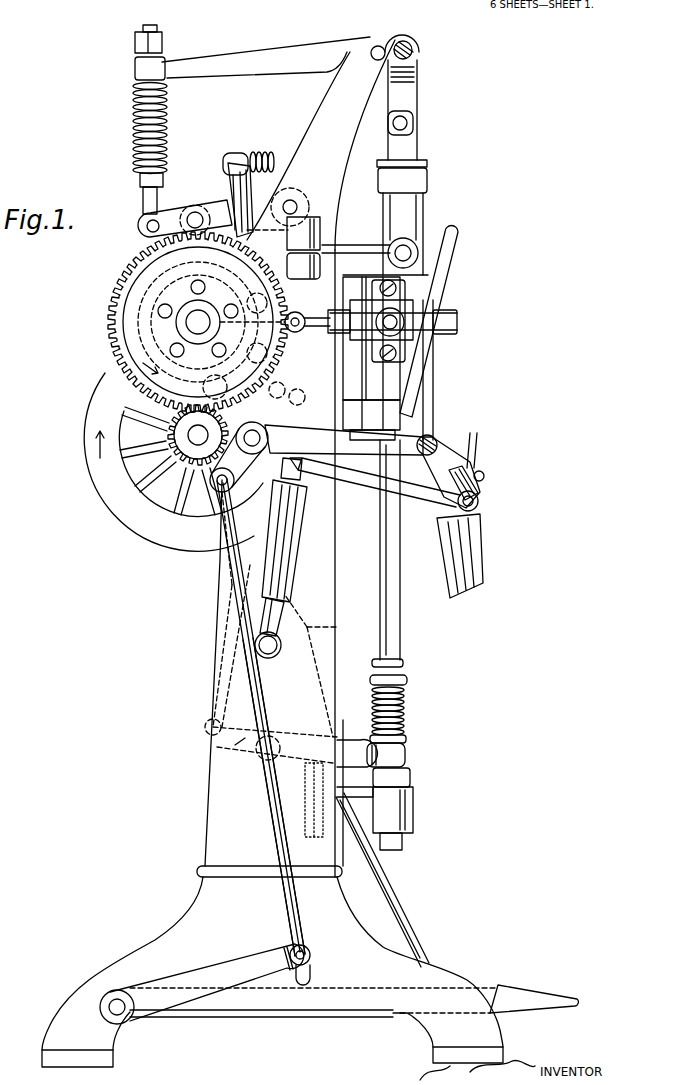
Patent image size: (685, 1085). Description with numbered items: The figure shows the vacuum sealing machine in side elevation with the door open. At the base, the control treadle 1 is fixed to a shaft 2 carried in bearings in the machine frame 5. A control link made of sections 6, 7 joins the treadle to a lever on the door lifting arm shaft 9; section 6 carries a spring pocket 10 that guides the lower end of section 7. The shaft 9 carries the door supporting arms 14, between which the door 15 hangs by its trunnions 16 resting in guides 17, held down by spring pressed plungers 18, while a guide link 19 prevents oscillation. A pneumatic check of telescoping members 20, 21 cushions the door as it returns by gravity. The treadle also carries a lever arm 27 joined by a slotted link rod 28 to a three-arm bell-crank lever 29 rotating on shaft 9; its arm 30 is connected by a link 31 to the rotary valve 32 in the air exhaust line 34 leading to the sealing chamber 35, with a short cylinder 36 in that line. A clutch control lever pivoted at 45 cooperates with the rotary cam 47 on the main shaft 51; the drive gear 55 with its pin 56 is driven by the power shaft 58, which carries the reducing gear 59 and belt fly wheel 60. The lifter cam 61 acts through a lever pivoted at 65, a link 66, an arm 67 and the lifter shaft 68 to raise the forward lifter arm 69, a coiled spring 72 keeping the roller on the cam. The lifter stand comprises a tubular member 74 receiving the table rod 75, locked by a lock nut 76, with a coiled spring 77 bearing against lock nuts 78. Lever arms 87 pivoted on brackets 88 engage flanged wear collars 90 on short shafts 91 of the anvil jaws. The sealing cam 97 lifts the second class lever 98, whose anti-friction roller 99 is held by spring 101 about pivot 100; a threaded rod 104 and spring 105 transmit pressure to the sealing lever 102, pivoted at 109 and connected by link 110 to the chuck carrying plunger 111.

The control treadle 1 is at (481, 987).
The shaft 2 is at (118, 1010).
The machine frame 5 is at (193, 906).
The link section 6 is at (392, 880).
The link section 7 is at (233, 583).
The door lifting arm shaft 9 is at (213, 455).
The spring pocket 10 is at (308, 627).
The door supporting arms 14 is at (419, 506).
The door 15 is at (483, 549).
The door trunnions 16 is at (478, 505).
The guides 17 is at (478, 498).
The spring pressed plungers 18 is at (484, 476).
The guide link 19 is at (433, 450).
The telescoping member 20 is at (305, 533).
The telescoping member 21 is at (285, 622).
The lever arm 27 is at (208, 969).
The slotted link rod 28 is at (270, 797).
The three-arm bell-crank lever 29 is at (237, 463).
The arm 30 is at (410, 430).
The link 31 is at (433, 388).
The rotary valve 32 is at (406, 310).
The air exhaust line 34 is at (400, 333).
The sealing chamber 35 is at (428, 287).
The short cylinder 36 is at (348, 335).
The pivot 45 is at (248, 281).
The rotary cam 47 is at (140, 328).
The main shaft 51 is at (198, 322).
The drive gear 55 is at (160, 312).
The pin 56 is at (158, 311).
The power shaft 58 is at (150, 440).
The reducing gear 59 is at (170, 435).
The belt fly wheel 60 is at (152, 540).
The lifter cam 61 is at (130, 277).
The pivot 65 is at (200, 366).
The link 66 is at (226, 647).
The arm 67 is at (235, 748).
The lifter shaft 68 is at (271, 742).
The forward lifter arm 69 is at (389, 753).
The coiled spring 72 is at (305, 820).
The tubular member 74 is at (404, 842).
The table rod 75 is at (402, 628).
The lock nut 76 is at (405, 664).
The coiled spring 77 is at (406, 705).
The lock nuts 78 is at (410, 680).
The lever arms 87 is at (293, 281).
The brackets 88 is at (302, 215).
The flanged wear collars 90 is at (414, 246).
The short shafts 91 is at (390, 246).
The sealing cam 97 is at (150, 398).
The second class lever 98 is at (222, 198).
The anti-friction roller 99 is at (195, 211).
The pivot 100 is at (292, 200).
The spring 101 is at (263, 153).
The sealing lever 102 is at (277, 48).
The threaded rod 104 is at (150, 204).
The spring 105 is at (133, 121).
The pivot 109 is at (378, 47).
The link 110 is at (418, 90).
The chuck carrying plunger 111 is at (414, 136).